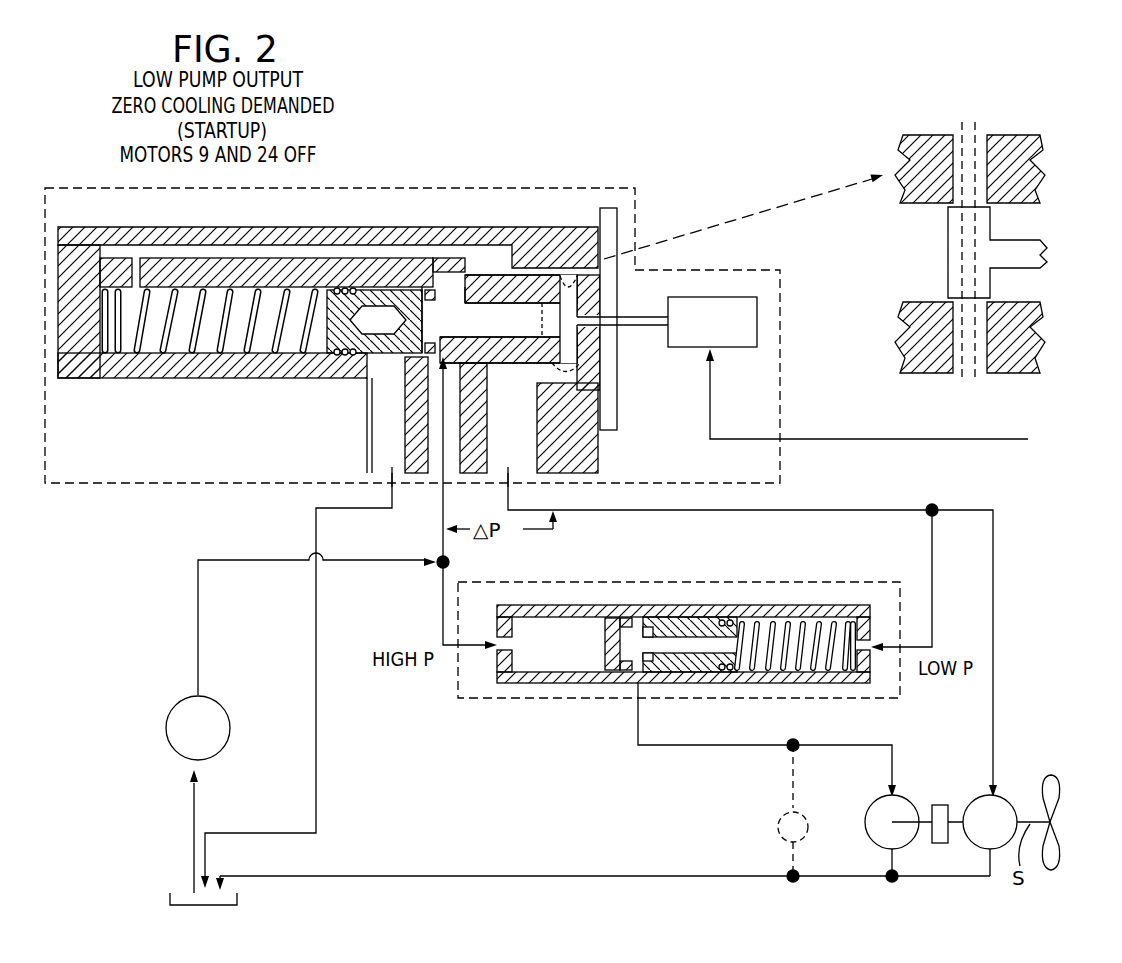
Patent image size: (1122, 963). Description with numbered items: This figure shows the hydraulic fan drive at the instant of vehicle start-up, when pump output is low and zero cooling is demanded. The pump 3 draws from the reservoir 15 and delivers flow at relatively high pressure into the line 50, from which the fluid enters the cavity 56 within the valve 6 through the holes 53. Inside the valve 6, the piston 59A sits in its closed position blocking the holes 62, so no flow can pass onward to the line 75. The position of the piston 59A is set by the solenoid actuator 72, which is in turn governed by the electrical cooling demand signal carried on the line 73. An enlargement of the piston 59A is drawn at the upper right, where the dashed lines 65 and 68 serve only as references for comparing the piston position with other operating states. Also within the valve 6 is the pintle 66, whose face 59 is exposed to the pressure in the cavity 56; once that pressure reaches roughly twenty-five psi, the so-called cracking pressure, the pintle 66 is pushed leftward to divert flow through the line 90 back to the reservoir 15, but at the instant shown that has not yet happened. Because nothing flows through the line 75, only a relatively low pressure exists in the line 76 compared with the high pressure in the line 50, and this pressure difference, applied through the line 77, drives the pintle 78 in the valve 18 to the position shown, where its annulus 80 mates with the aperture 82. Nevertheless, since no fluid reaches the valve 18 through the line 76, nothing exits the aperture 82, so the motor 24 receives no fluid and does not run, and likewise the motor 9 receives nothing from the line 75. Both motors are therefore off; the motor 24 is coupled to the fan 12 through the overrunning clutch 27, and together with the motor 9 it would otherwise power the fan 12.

The pump 3 is at (224, 708).
The valve 6 is at (780, 390).
The motor 9 is at (1000, 800).
The fan 12 is at (1052, 775).
The reservoir 15 is at (237, 898).
The valve 18 is at (498, 698).
The motor 24 is at (873, 805).
The overrunning clutch 27 is at (938, 805).
The line 50 is at (370, 565).
The holes 53 is at (436, 303).
The cavity 56 is at (534, 334).
The face 59 is at (427, 321).
The piston 59A is at (552, 317).
The holes 62 is at (568, 290).
The dashed line 65 is at (953, 120).
The pintle 66 is at (392, 333).
The dashed line 68 is at (990, 120).
The solenoid actuator 72 is at (690, 348).
The line 73 is at (905, 440).
The line 75 is at (607, 511).
The line 76 is at (932, 578).
The line 77 is at (443, 605).
The pintle 78 is at (605, 645).
The annulus 80 is at (648, 625).
The aperture 82 is at (625, 681).
The line 90 is at (316, 520).